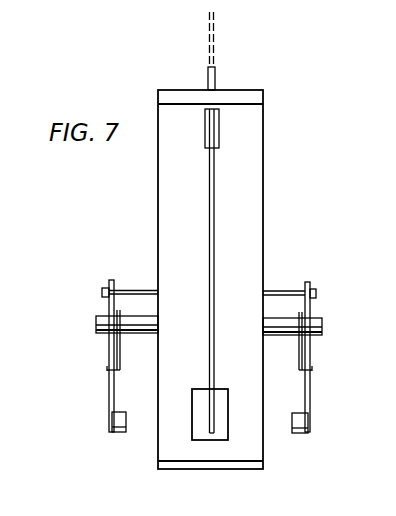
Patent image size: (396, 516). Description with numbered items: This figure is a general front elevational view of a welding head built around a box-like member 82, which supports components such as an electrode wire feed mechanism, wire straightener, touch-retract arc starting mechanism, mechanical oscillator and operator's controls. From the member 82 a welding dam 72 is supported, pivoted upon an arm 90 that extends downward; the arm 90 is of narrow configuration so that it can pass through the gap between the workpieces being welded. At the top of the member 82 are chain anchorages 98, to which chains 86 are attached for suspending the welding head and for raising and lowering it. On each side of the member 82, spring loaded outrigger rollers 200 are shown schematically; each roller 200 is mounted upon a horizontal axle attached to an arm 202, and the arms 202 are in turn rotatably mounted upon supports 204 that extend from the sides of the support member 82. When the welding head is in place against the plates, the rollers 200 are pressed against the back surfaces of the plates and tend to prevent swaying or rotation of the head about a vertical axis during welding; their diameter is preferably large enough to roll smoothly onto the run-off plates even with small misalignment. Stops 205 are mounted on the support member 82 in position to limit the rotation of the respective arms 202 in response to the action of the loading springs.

The welding dam 72 is at (224, 412).
The box-like member 82 is at (263, 202).
The chains 86 is at (217, 43).
The arm 90 is at (212, 262).
The chain anchorages 98 is at (215, 78).
The spring loaded outrigger rollers 200 is at (117, 433).
The arms 202 is at (108, 389).
The supports 204 is at (130, 318).
The stops 205 is at (100, 292).